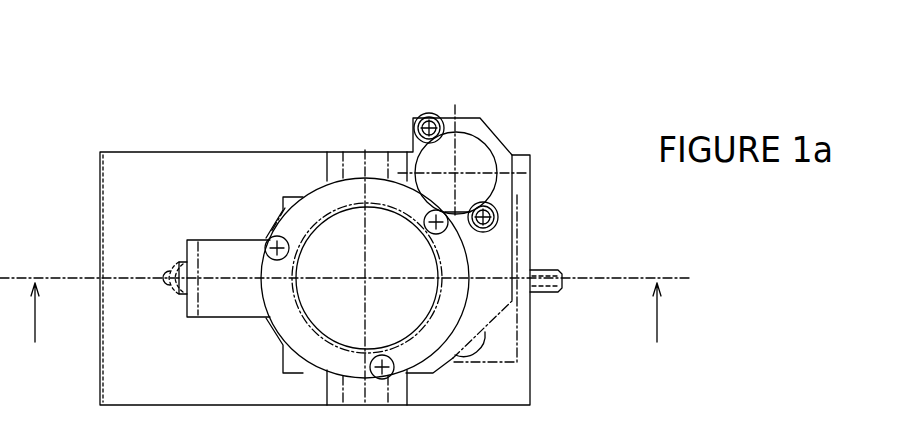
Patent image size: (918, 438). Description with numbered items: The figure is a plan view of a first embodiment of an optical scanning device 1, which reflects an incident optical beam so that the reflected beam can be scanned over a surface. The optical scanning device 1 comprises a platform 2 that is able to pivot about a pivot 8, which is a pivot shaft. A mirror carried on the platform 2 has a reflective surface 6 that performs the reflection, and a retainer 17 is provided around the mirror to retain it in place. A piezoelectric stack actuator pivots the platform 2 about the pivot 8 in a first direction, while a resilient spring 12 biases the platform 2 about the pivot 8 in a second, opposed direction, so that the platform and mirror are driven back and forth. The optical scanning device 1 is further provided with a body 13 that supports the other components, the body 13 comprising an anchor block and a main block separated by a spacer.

The optical scanning device 1 is at (648, 72).
The platform 2 is at (232, 262).
The reflective surface 6 is at (388, 255).
The pivot 8 is at (350, 160).
The resilient spring 12 is at (180, 258).
The body 13 is at (98, 218).
The retainer 17 is at (312, 210).